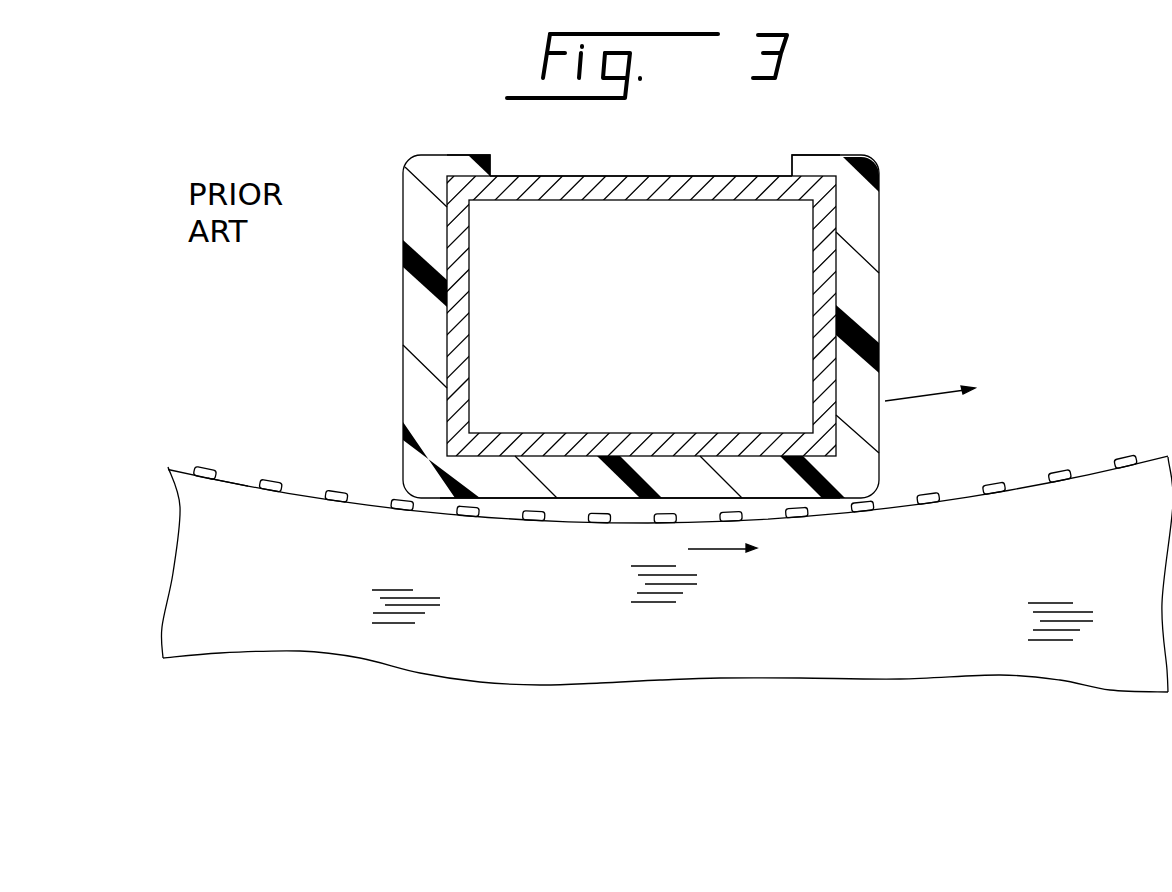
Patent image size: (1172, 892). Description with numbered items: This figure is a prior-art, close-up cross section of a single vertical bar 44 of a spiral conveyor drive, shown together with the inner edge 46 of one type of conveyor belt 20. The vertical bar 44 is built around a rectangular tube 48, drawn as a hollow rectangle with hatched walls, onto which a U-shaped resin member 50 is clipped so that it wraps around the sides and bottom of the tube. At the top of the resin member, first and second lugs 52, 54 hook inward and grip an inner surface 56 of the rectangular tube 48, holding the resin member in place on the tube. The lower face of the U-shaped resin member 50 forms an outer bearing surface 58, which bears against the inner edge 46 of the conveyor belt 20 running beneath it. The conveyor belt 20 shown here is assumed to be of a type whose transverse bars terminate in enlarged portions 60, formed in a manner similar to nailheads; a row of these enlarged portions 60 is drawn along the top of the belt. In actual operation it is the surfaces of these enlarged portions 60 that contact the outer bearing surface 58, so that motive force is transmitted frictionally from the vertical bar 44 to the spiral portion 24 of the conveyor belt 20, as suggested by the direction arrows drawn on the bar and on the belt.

The conveyor belt 20 is at (165, 605).
The spiral portion 24 is at (1122, 483).
The vertical bar 44 is at (953, 193).
The inner edge 46 is at (237, 482).
The rectangular tube 48 is at (639, 287).
The U-shaped resin member 50 is at (676, 351).
The first lug 52 is at (468, 163).
The second lug 54 is at (817, 162).
The inner surface 56 is at (646, 176).
The outer bearing surface 58 is at (566, 498).
The enlarged portion 60 is at (930, 496).